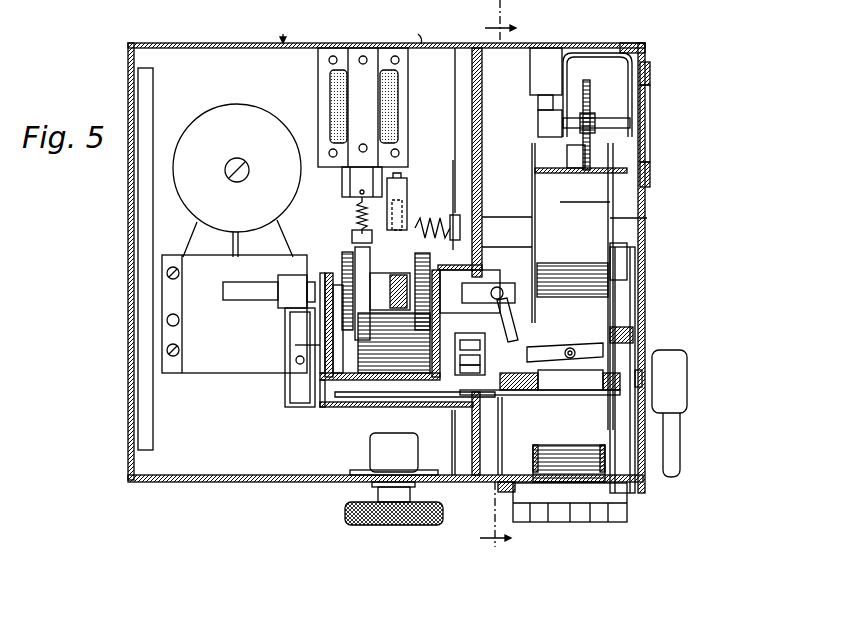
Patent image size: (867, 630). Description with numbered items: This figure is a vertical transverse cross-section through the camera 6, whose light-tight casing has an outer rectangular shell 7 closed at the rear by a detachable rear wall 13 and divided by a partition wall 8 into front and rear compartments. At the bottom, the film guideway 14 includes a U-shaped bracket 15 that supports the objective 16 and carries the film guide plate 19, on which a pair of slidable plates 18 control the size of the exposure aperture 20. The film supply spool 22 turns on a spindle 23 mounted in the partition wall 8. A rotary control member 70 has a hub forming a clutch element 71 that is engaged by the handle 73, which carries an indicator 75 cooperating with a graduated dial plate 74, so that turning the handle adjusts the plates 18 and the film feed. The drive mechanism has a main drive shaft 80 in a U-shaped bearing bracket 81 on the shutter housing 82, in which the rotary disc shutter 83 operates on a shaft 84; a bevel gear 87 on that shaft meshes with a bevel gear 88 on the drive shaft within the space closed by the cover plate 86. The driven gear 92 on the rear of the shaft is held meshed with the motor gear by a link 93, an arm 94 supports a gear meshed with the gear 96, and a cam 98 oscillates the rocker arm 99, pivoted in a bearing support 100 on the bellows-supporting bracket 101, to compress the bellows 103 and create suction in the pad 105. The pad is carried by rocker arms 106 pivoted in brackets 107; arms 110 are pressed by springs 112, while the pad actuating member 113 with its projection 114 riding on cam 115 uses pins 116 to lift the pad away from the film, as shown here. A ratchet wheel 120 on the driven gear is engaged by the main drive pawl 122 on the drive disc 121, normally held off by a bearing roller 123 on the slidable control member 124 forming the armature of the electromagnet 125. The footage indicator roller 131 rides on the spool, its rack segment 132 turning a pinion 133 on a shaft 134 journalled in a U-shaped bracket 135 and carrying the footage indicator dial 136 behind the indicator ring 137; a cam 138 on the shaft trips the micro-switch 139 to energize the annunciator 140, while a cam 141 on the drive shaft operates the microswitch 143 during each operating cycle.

The camera 6 is at (277, 34).
The outer rectangular shell 7 is at (413, 33).
The partition wall 8 is at (483, 166).
The detachable rear wall 13 is at (130, 210).
The film guideway 14 is at (491, 430).
The U-shaped bracket 15 is at (500, 441).
The objective 16 is at (567, 468).
The plates 18 is at (570, 386).
The film guide plate 19 is at (516, 386).
The exposure aperture 20 is at (610, 386).
The film supply spool 22 is at (610, 202).
The spindle 23 is at (505, 221).
The rotary control member 70 is at (635, 335).
The clutch element 71 is at (642, 378).
The handle 73 is at (680, 430).
The dial plate 74 is at (647, 218).
The indicator 75 is at (645, 270).
The main drive shaft 80 is at (258, 283).
The U-shaped bearing bracket 81 is at (320, 344).
The shutter housing 82 is at (368, 406).
The rotary disc shutter 83 is at (420, 398).
The shaft 84 is at (460, 400).
The cover plate 86 is at (480, 275).
The bevel gear 87 is at (488, 293).
The bevel gear 88 is at (470, 290).
The driven gear 92 is at (342, 263).
The link 93 is at (328, 278).
The arm 94 is at (389, 291).
The gear 96 is at (428, 258).
The cam 98 is at (390, 291).
The rocker arm 99 is at (405, 191).
The bearing support 100 is at (405, 212).
The bellows-supporting bracket 101 is at (339, 329).
The bellows 103 is at (487, 357).
The pad 105 is at (585, 348).
The rocker arms 106 is at (535, 350).
The brackets 107 is at (570, 380).
The arms 110 is at (548, 323).
The springs 112 is at (490, 372).
The pad actuating member 113 is at (469, 351).
The projection 114 is at (515, 315).
The cam 115 is at (540, 290).
The pins 116 is at (466, 347).
The ratchet wheel 120 is at (352, 320).
The drive disc 121 is at (368, 276).
The main drive pawl 122 is at (353, 238).
The bearing roller 123 is at (357, 226).
The slidable control member 124 is at (342, 173).
The electromagnet 125 is at (330, 118).
The roller 131 is at (575, 176).
The rack segment 132 is at (590, 95).
The pinion 133 is at (592, 115).
The shaft 134 is at (625, 126).
The U-shaped bracket 135 is at (645, 105).
The footage indicator dial 136 is at (650, 118).
The indicator ring 137 is at (650, 178).
The cam 138 is at (538, 120).
The micro-switch 139 is at (532, 68).
The annunciator 140 is at (250, 375).
The cam 141 is at (287, 306).
The microswitch 143 is at (300, 402).